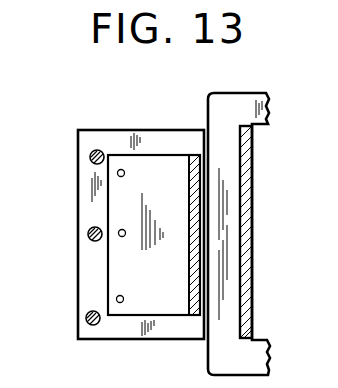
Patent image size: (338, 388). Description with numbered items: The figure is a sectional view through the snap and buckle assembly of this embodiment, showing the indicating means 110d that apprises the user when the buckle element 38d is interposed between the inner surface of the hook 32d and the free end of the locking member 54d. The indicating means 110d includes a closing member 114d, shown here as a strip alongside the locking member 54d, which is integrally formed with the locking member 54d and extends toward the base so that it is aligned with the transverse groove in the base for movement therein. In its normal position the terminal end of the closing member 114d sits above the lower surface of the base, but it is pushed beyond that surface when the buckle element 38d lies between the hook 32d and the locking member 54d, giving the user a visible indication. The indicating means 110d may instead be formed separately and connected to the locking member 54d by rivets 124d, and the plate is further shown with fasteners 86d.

The locking member 54d is at (115, 129).
The screws 86d is at (90, 153).
The rivets 124d is at (118, 174).
The closing member 114d is at (190, 200).
The indicating means 110d is at (172, 331).
The buckle element 38d is at (223, 158).
The hook 32d is at (251, 239).